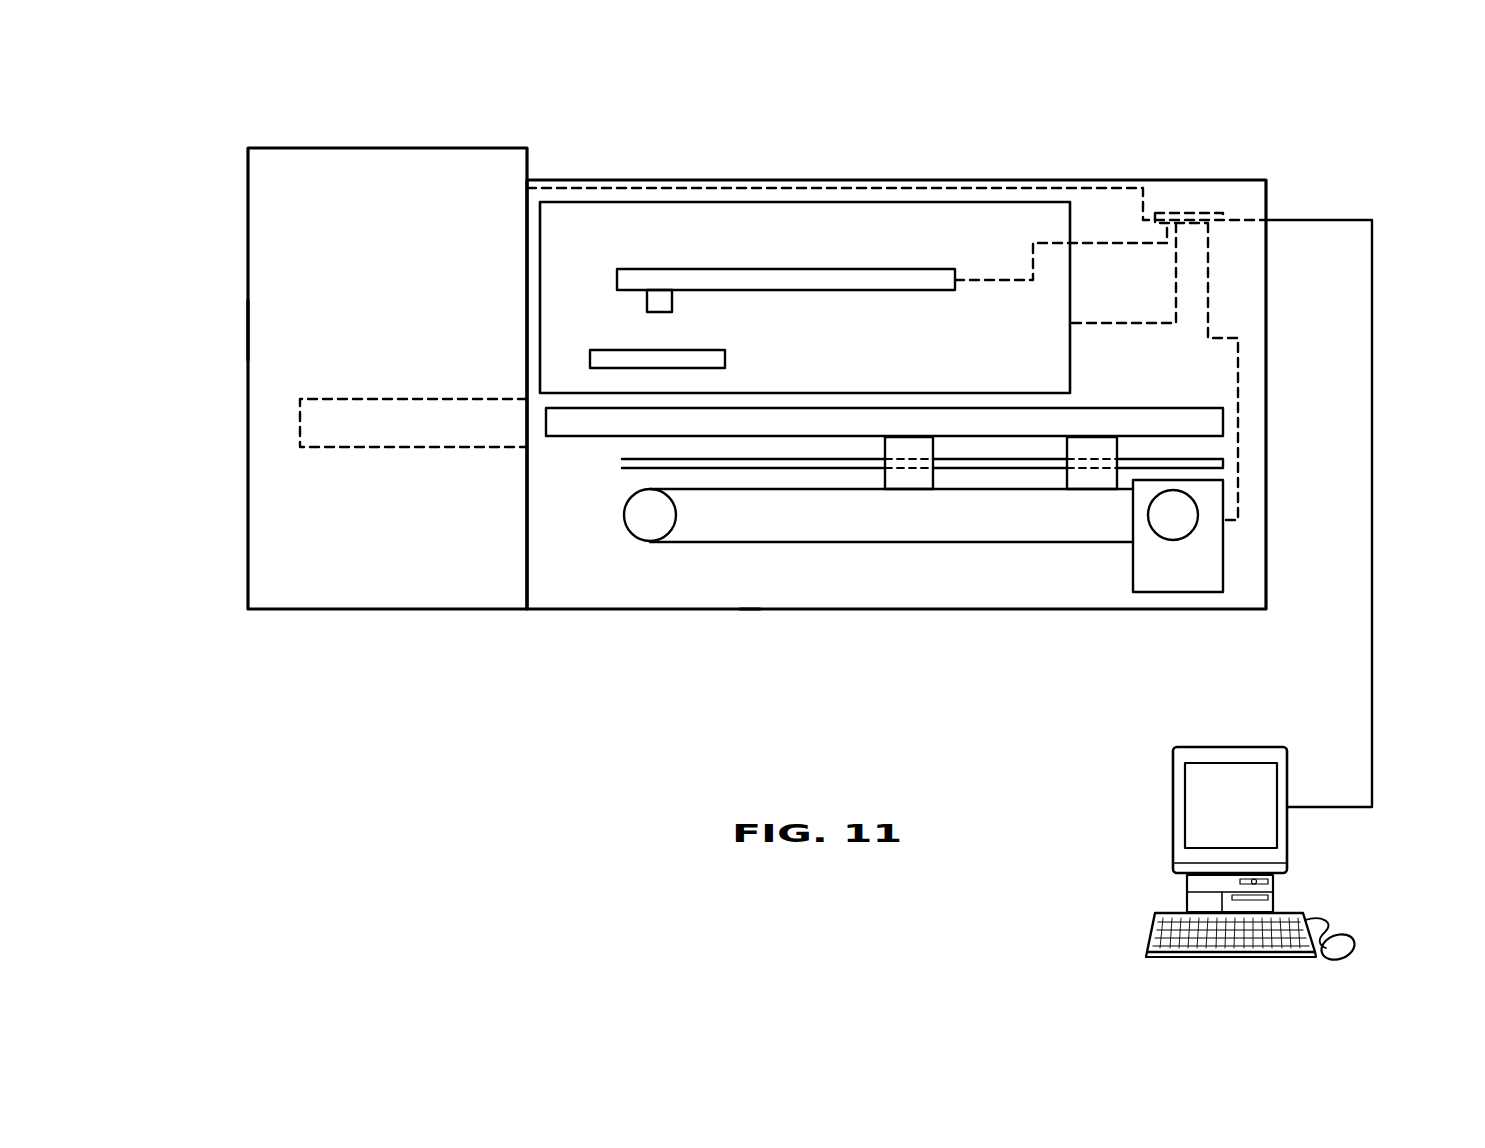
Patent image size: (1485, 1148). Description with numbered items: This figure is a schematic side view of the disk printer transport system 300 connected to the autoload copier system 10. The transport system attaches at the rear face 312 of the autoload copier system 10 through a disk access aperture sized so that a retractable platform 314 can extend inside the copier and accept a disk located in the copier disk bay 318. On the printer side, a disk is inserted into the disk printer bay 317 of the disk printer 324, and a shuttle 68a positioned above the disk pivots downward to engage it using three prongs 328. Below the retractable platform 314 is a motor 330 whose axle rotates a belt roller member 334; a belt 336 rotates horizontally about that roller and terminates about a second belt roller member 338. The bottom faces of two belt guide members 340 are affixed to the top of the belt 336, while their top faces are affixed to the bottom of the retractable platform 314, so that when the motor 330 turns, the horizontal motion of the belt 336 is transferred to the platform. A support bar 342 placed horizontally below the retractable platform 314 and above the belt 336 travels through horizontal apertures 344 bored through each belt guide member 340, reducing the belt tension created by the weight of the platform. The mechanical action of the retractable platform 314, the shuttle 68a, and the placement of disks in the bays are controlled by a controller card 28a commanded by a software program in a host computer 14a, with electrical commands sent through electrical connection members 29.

The autoload copier system 10 is at (240, 328).
The host computer 14a is at (1170, 832).
The controller card 28a is at (1200, 213).
The electrical connection members 29 is at (1112, 243).
The shuttle 68a is at (928, 268).
The disk printer transport system 300 is at (756, 640).
The rear face 312 is at (527, 163).
The retractable platform 314 is at (1222, 408).
The disk printer bay 317 is at (600, 350).
The copier disk bay 318 is at (300, 418).
The disk printer 324 is at (863, 199).
The prongs 328 is at (672, 303).
The motor 330 is at (1212, 592).
The belt roller member 334 is at (1197, 527).
The belt 336 is at (738, 542).
The second belt roller member 338 is at (623, 522).
The belt guide members 340 is at (885, 437).
The support bar 342 is at (620, 463).
The horizontal apertures 344 is at (945, 464).